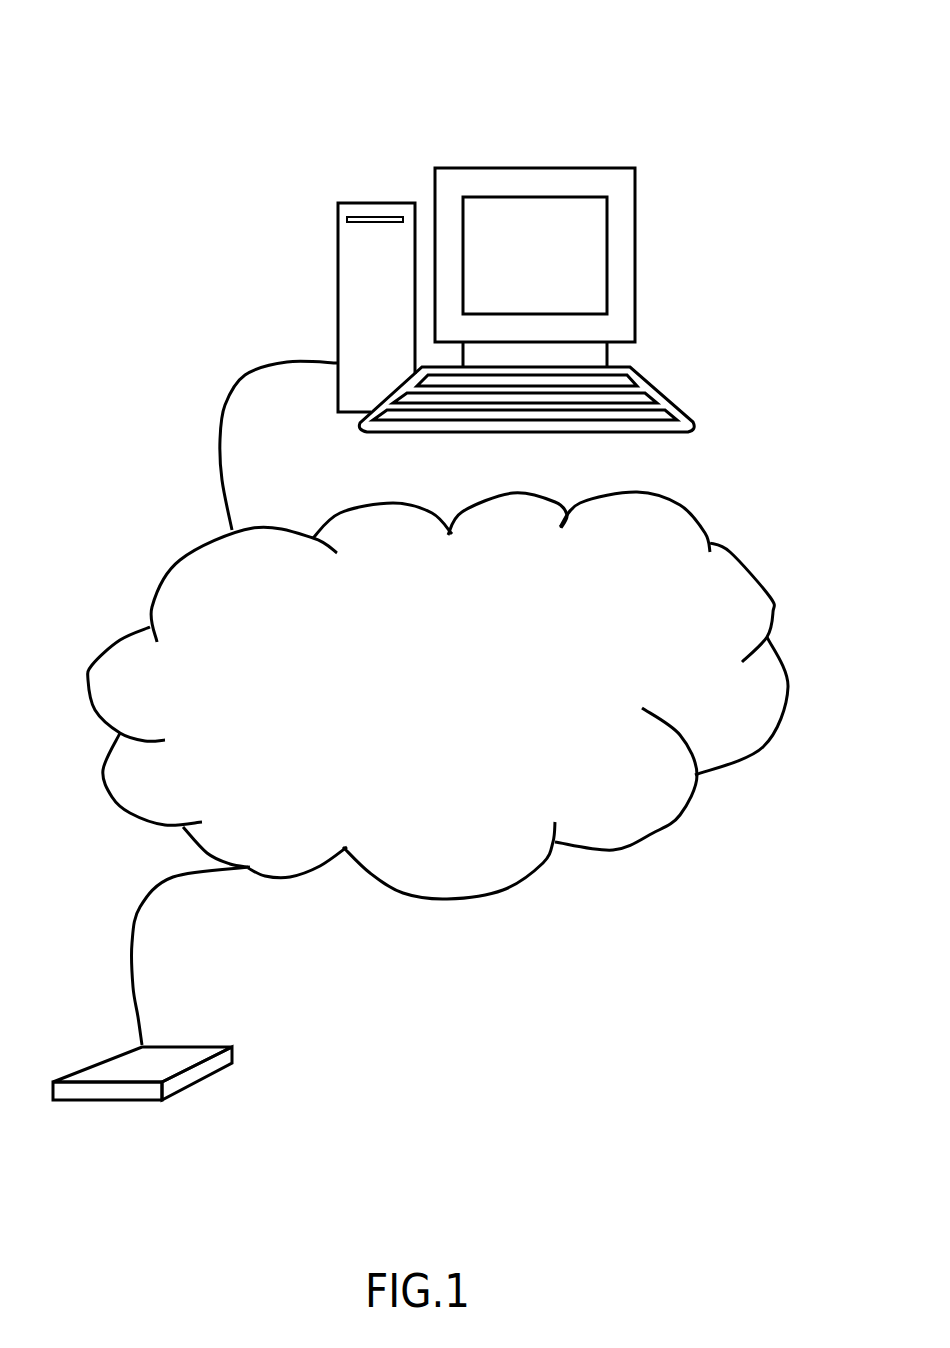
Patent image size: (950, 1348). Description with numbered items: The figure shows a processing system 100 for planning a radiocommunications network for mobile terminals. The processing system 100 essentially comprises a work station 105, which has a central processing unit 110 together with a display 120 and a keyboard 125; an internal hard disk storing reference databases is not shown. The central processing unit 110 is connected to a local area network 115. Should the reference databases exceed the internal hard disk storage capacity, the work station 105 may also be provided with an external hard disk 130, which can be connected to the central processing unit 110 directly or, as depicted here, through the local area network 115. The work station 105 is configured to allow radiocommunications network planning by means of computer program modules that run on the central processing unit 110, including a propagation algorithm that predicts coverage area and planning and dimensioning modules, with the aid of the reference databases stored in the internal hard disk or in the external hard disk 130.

The processing system 100 is at (116, 109).
The work station 105 is at (726, 255).
The central processing unit 110 is at (337, 327).
The local area network 115 is at (742, 553).
The display 120 is at (588, 167).
The keyboard 125 is at (660, 400).
The external hard disk 130 is at (213, 1045).